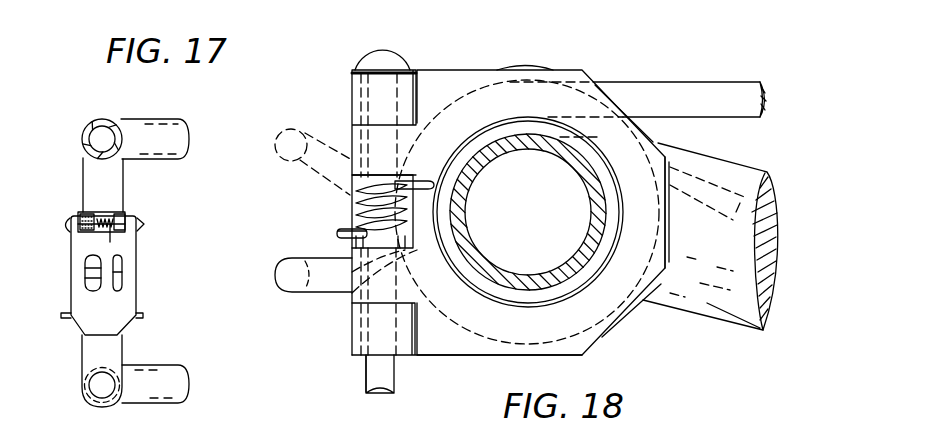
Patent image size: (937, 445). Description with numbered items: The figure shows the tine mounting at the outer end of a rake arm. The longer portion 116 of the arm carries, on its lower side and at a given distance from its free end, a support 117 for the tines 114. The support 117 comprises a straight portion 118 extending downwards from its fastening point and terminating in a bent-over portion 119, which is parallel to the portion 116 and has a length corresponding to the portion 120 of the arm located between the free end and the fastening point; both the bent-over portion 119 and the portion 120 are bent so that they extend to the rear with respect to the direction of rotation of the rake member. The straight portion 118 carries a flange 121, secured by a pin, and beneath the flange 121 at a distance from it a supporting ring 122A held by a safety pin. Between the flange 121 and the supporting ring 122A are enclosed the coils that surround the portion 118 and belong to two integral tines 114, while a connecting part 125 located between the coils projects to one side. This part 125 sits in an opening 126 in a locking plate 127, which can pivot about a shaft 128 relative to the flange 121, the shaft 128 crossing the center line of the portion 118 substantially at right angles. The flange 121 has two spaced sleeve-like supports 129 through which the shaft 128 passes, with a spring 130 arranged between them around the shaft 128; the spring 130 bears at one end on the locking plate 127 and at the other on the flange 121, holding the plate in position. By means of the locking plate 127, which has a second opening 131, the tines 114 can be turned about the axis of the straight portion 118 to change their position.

In FIG. 18, the tine 114 is at (706, 72).
In FIG. 17, the longer portion of the arm 116 is at (115, 106).
In FIG. 18, the support 117 is at (726, 325).
In FIG. 17, the straight portion 118 is at (90, 350).
In FIG. 18, the straight portion 118 is at (538, 110).
In FIG. 17, the bent-over portion 119 is at (170, 390).
In FIG. 18, the bent-over portion 119 is at (712, 302).
In FIG. 17, the portion of the arm between free end and fastening point 120 is at (182, 134).
In FIG. 18, the flange 121 is at (476, 74).
In FIG. 17, the supporting ring 122A is at (135, 319).
In FIG. 17, the connecting part 125 is at (121, 275).
In FIG. 18, the connecting part 125 is at (292, 127).
In FIG. 17, the opening 126 is at (120, 257).
In FIG. 18, the opening 126 is at (328, 365).
In FIG. 17, the locking plate 127 is at (126, 303).
In FIG. 17, the shaft 128 is at (66, 215).
In FIG. 18, the shaft 128 is at (405, 28).
In FIG. 17, the sleeve-like support 129 is at (93, 213).
In FIG. 18, the sleeve-like support 129 is at (355, 143).
In FIG. 17, the spring 130 is at (104, 233).
In FIG. 18, the spring 130 is at (357, 210).
In FIG. 17, the second opening 131 is at (88, 268).
In FIG. 18, the second opening 131 is at (350, 186).